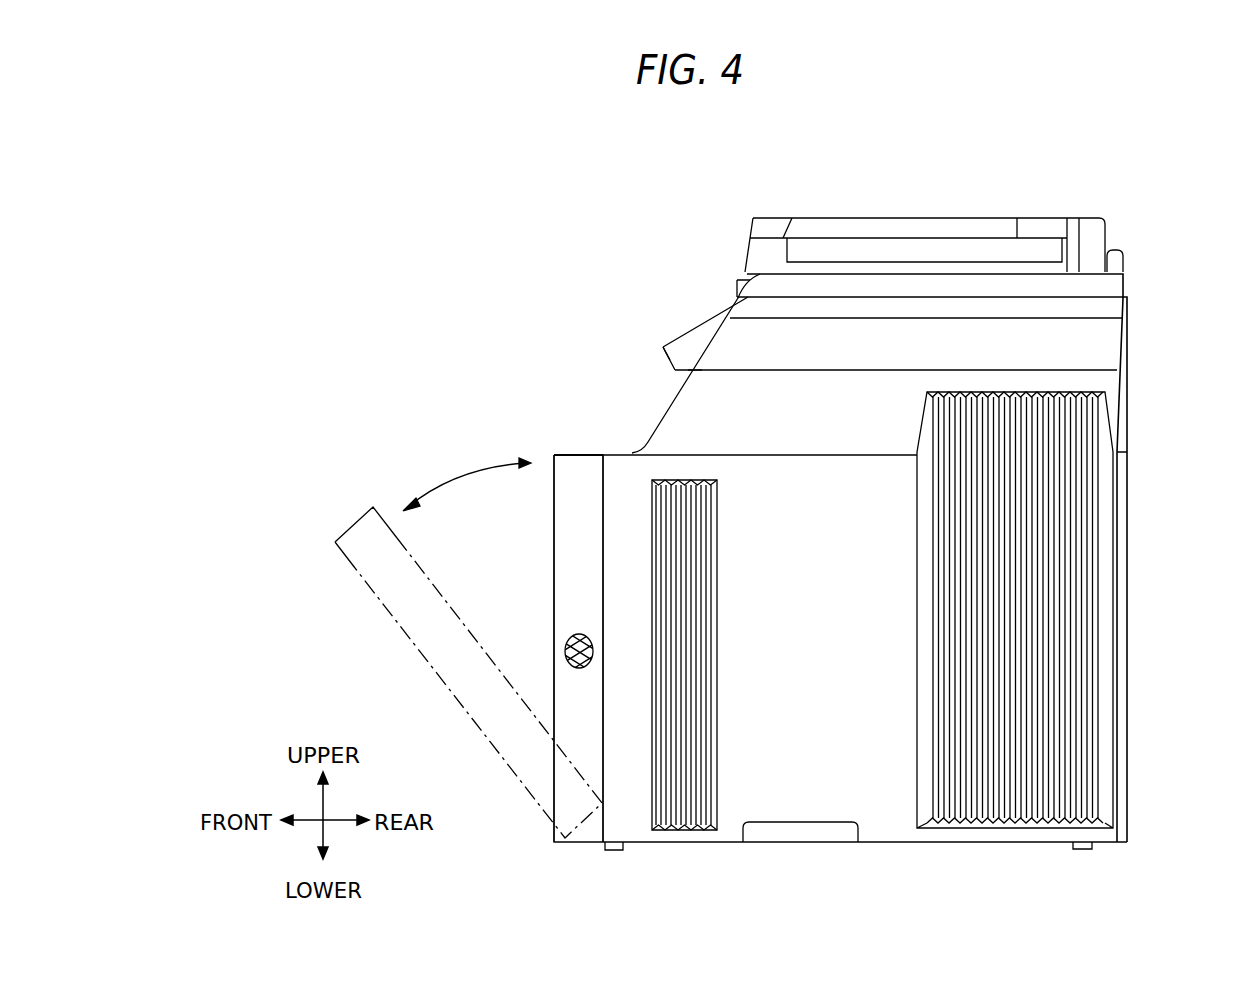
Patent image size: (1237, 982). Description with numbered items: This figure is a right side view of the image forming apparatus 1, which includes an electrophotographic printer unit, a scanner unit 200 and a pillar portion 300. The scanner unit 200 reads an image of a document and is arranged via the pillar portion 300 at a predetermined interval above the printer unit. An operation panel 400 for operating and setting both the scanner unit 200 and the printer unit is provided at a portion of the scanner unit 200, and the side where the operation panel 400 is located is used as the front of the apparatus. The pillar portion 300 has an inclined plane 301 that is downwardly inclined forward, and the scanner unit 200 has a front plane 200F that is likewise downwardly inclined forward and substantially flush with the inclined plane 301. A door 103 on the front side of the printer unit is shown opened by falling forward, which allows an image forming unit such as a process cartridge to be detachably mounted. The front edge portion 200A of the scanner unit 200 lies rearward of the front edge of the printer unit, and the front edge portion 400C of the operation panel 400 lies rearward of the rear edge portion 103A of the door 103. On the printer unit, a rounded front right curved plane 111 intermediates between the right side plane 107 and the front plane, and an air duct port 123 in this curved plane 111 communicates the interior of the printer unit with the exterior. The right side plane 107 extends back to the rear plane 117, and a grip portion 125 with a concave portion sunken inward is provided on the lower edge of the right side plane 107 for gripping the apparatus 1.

The image forming apparatus 1 is at (878, 204).
The scanner unit 200 is at (1080, 204).
The pillar portion 300 is at (802, 393).
The operation panel 400 is at (712, 318).
The front plane 200F is at (730, 318).
The front edge portion 200A is at (694, 370).
The front edge portion 400C is at (663, 347).
The inclined plane 301 is at (673, 403).
The rear edge portion 103A is at (607, 455).
The door 103 is at (576, 498).
The front right curved plane 111 is at (567, 515).
The air duct port 123 is at (565, 636).
The rear plane 117 is at (1128, 651).
The grip portion 125 is at (803, 832).
The right side plane 107 is at (872, 773).